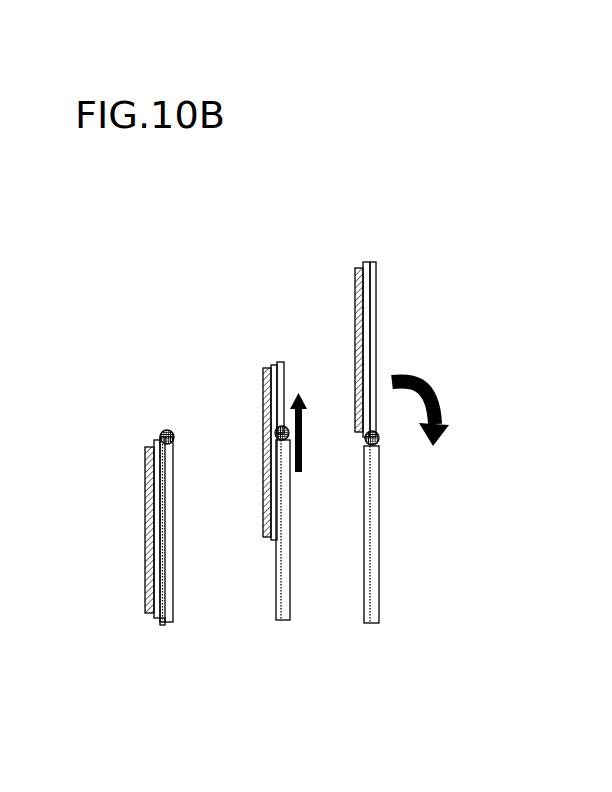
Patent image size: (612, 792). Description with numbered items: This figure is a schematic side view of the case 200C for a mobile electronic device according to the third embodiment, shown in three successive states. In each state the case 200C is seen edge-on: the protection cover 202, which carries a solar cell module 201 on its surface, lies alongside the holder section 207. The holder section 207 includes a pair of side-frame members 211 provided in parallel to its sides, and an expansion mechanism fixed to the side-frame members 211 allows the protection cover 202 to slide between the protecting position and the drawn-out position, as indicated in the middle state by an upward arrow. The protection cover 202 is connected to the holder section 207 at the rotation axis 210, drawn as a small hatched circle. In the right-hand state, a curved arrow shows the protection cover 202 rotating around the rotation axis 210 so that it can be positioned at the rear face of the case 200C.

The case for a mobile electronic device 200C is at (221, 261).
The solar cell module 201 is at (145, 540).
The protection cover 202 is at (153, 617).
The holder section 207 is at (174, 622).
The rotation axis 210 is at (165, 428).
The side-frame members 211 is at (166, 625).